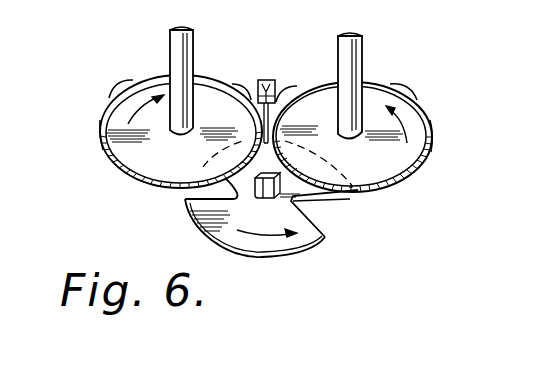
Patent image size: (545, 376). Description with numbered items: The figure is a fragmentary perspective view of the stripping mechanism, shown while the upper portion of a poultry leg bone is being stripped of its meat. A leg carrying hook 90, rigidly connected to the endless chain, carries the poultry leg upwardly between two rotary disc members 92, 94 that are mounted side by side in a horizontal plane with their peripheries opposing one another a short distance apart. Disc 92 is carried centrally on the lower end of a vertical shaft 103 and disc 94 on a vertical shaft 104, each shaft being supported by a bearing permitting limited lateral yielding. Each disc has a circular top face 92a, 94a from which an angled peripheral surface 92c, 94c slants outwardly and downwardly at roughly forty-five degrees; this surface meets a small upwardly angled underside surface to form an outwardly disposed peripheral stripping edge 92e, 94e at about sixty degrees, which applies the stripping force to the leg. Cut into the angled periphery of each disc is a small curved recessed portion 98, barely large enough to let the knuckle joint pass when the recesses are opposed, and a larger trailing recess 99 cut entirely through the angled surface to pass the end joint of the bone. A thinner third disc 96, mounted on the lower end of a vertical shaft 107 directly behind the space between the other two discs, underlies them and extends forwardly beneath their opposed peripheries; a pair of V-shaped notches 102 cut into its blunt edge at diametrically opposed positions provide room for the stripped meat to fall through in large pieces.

The leg carrying hook 90 is at (268, 80).
The rotary disc member 92 is at (420, 165).
The top face 92a is at (385, 168).
The peripheral surface 92c is at (433, 141).
The peripheral stripping edge 92e is at (431, 124).
The rotary disc member 94 is at (154, 176).
The top face 94a is at (140, 155).
The peripheral surface 94c is at (106, 112).
The peripheral stripping edge 94e is at (101, 136).
The third disc 96 is at (300, 250).
The recessed portion 98 is at (238, 92).
The recess 99 is at (120, 93).
The V-shaped notch 102 is at (185, 200).
The vertical shaft 103 is at (360, 55).
The vertical shaft 104 is at (190, 52).
The vertical shaft 107 is at (265, 200).